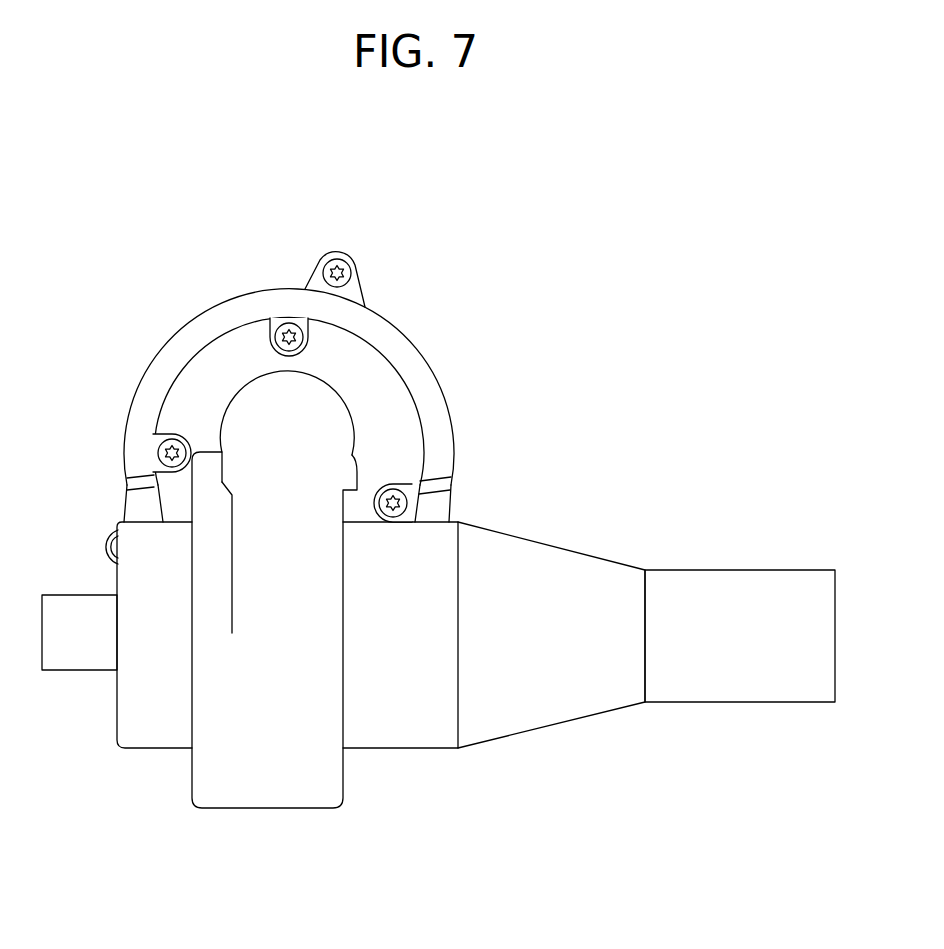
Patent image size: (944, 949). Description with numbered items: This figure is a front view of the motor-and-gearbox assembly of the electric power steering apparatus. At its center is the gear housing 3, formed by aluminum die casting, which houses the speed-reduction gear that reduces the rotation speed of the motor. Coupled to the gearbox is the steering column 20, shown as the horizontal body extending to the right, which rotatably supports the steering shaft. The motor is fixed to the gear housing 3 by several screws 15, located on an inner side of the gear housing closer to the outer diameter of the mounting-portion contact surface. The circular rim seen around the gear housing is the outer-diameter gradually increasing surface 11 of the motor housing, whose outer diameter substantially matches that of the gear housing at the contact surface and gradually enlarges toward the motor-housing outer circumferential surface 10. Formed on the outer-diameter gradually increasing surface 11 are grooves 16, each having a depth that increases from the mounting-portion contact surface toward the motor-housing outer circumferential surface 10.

The gear housing 3 is at (243, 352).
The motor-housing outer circumferential surface 10 is at (418, 347).
The outer-diameter gradually increasing surface 11 is at (387, 336).
The screws 15 is at (288, 330).
The grooves 16 is at (135, 486).
The steering column 20 is at (403, 720).